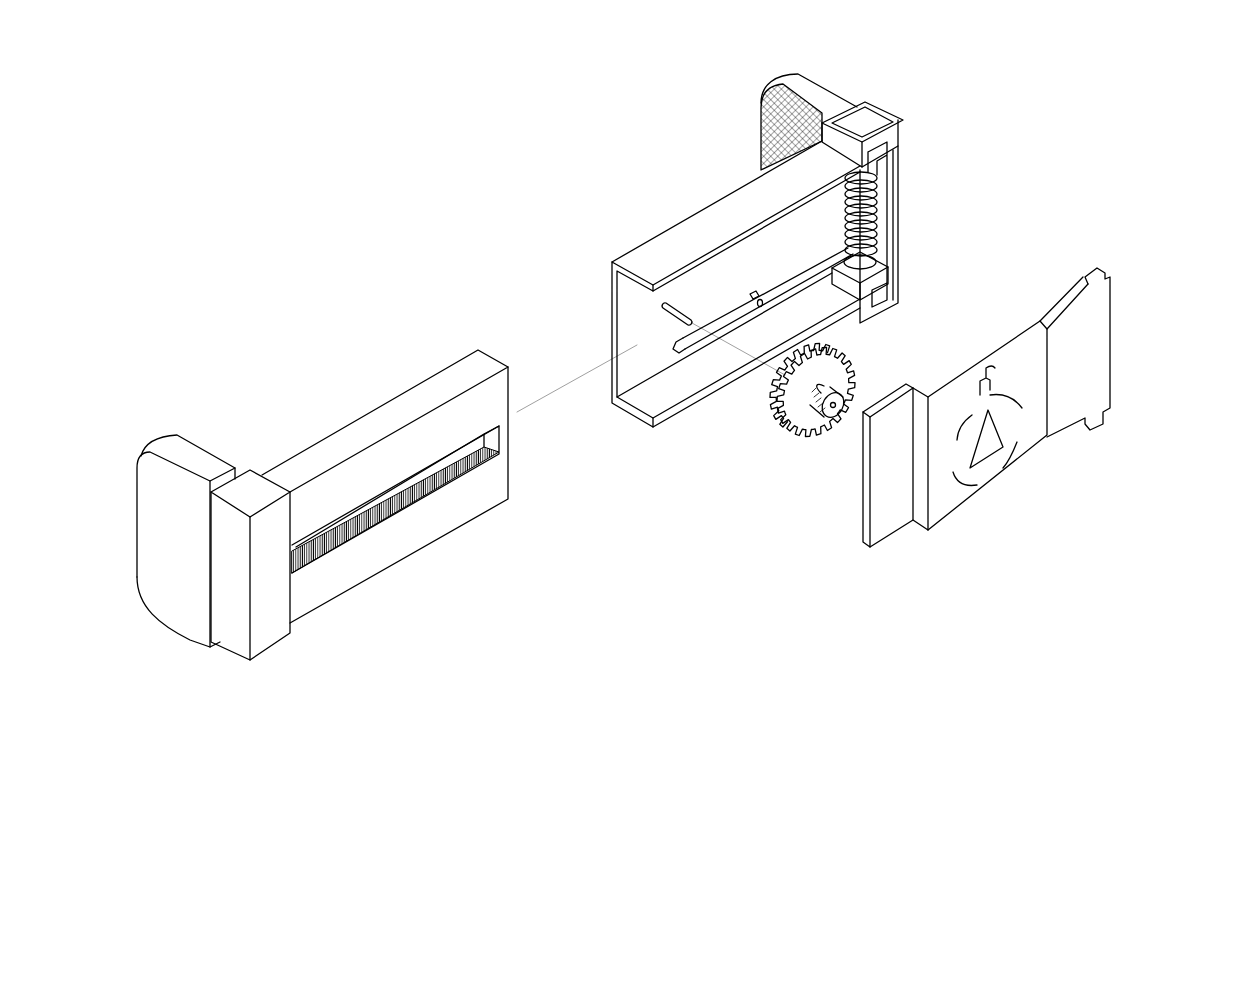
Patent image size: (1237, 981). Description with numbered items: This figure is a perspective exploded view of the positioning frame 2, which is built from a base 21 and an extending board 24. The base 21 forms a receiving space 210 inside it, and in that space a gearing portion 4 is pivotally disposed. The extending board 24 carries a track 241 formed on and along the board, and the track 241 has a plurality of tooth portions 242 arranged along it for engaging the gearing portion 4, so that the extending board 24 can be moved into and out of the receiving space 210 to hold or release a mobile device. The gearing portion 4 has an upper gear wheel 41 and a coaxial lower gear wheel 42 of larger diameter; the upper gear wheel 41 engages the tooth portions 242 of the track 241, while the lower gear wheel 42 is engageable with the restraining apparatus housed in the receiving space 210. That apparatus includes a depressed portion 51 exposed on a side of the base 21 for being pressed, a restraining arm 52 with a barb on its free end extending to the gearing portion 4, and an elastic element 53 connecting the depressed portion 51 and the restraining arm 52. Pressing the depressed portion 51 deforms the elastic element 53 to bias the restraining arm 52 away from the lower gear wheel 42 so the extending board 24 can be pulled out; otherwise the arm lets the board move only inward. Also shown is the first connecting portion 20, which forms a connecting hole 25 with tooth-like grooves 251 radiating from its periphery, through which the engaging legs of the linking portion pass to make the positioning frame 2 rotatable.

The positioning frame 2 is at (226, 100).
The extending board 24 is at (216, 347).
The track 241 is at (343, 544).
The tooth portions 242 is at (423, 495).
The base 21 is at (727, 207).
The receiving space 210 is at (643, 305).
The depressed portion 51 is at (862, 118).
The restraining arm 52 is at (783, 291).
The elastic element 53 is at (877, 218).
The gearing portion 4 is at (712, 452).
The upper gear wheel 41 is at (812, 430).
The lower gear wheel 42 is at (782, 392).
The first connecting portion 20 is at (945, 505).
The connecting hole 25 is at (1135, 467).
The tooth-like grooves 251 is at (970, 468).